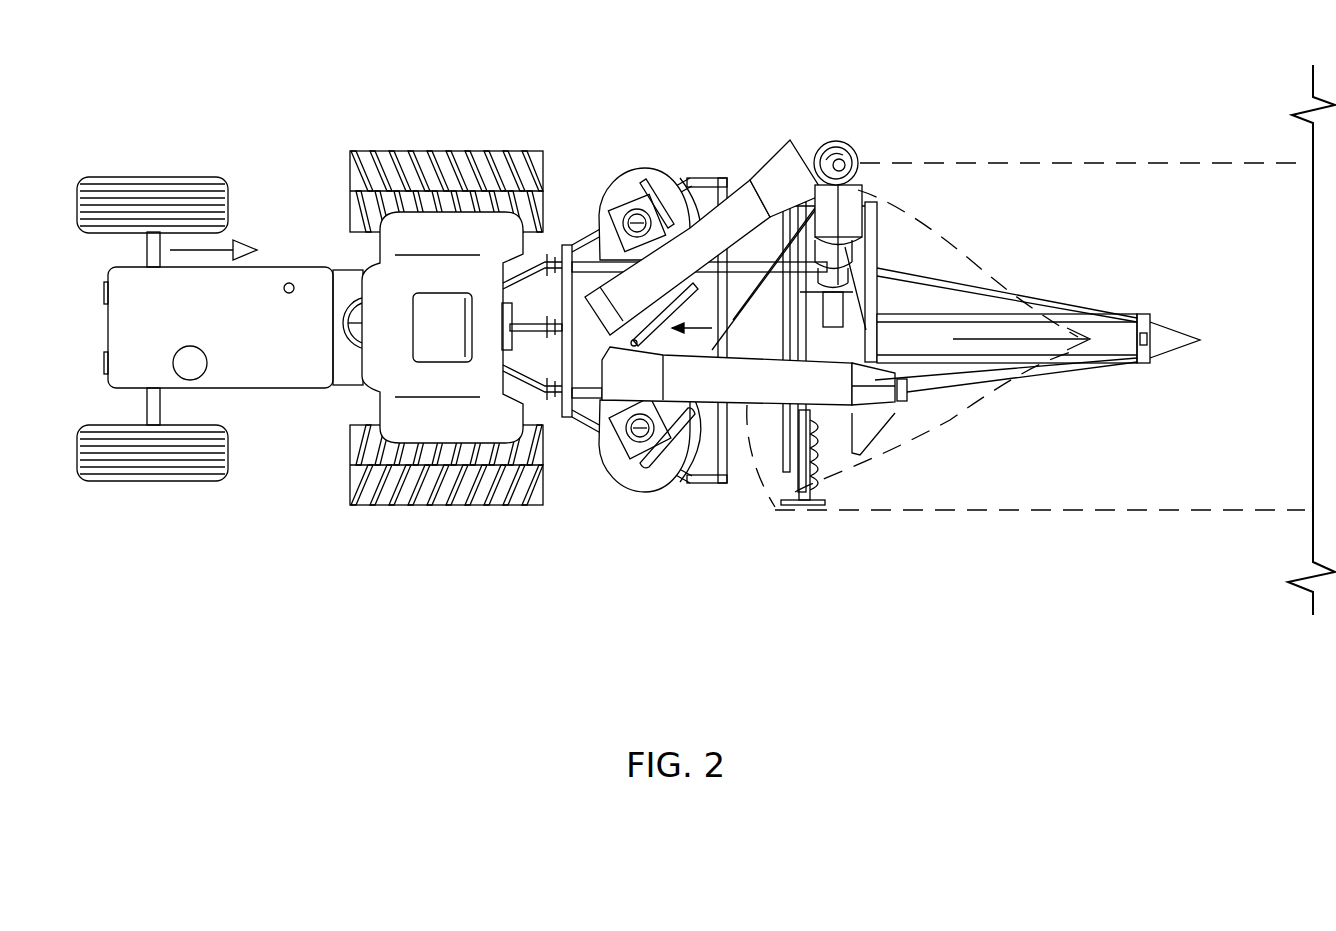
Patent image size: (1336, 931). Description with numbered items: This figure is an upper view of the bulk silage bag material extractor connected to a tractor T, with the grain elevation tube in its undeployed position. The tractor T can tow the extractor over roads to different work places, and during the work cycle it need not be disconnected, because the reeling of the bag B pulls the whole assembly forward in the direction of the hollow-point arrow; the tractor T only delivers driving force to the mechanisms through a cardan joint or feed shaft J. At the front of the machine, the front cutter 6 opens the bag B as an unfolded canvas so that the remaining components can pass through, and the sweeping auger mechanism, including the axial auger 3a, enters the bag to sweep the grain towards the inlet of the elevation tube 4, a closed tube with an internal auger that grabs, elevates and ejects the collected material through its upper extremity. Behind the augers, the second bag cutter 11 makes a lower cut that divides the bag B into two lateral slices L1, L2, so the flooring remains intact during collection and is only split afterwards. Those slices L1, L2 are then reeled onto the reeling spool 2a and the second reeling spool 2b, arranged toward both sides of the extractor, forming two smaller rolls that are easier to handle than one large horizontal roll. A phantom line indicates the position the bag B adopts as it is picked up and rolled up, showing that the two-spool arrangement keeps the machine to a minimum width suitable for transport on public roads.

The tractor T is at (294, 428).
The cardan joint or feed shaft J is at (527, 292).
The second bag cutter 11 is at (690, 334).
The reeling spool 2a is at (626, 158).
The second reeling spool 2b is at (608, 494).
The slice L1 is at (707, 335).
The slice L2 is at (692, 276).
The elevation tube 4 is at (814, 134).
The front cutter 6 is at (1076, 334).
The axial auger 3a is at (1163, 352).
The bag B is at (1208, 163).